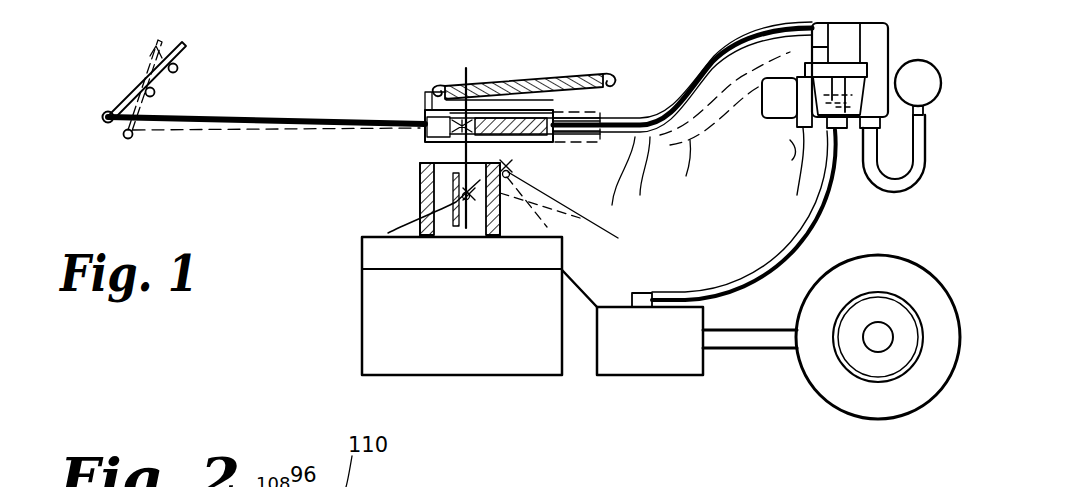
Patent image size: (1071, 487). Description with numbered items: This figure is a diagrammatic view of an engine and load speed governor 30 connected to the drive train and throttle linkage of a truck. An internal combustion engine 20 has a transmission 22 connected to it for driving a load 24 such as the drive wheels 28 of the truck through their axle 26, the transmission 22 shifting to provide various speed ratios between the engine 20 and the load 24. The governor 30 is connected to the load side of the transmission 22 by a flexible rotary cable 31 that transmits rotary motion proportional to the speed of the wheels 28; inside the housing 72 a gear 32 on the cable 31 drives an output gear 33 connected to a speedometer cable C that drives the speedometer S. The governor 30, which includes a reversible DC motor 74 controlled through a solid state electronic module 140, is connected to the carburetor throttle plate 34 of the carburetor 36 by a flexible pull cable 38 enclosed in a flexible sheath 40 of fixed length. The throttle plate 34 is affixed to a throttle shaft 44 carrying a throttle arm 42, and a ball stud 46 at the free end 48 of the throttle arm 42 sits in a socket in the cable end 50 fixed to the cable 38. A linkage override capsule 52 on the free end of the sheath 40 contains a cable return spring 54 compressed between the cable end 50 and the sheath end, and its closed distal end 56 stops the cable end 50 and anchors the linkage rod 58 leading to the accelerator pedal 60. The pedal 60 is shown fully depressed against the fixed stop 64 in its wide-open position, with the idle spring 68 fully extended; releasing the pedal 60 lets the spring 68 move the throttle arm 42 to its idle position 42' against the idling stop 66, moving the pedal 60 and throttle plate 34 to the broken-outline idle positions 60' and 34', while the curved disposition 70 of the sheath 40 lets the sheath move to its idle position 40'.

The internal combustion engine 20 is at (410, 375).
The transmission 22 is at (654, 375).
The load 24 is at (788, 376).
The axle 26 is at (888, 346).
The drive wheels 28 is at (874, 418).
The engine and load speed governor 30 is at (890, 44).
The flexible rotary cable 31 is at (822, 198).
The gear 32 is at (792, 160).
The output gear 33 is at (892, 64).
The carburetor throttle plate 34 is at (415, 197).
The throttle plate idle position 34' is at (542, 208).
The carburetor 36 is at (420, 212).
The flexible pull cable 38 is at (642, 184).
The flexible sheath 40 is at (639, 183).
The sheath idle position 40' is at (717, 163).
The throttle arm 42 is at (294, 142).
The throttle arm idle position 42' is at (574, 212).
The throttle shaft 44 is at (390, 231).
The ball stud 46 is at (466, 92).
The free end of throttle arm 48 is at (512, 168).
The cable end 50 is at (425, 112).
The linkage override capsule 52 is at (538, 144).
The cable return spring 54 is at (553, 143).
The distal end of capsule 56 is at (425, 124).
The linkage rod 58 is at (248, 118).
The accelerator pedal 60 is at (95, 100).
The accelerator pedal idle position 60' is at (130, 78).
The fixed stop 64 is at (184, 64).
The idling stop 66 is at (555, 208).
The idle spring 68 is at (530, 80).
The curved disposition of flexible sheath 70 is at (702, 92).
The housing 72 is at (812, 28).
The reversible DC motor 74 is at (768, 120).
The solid state electronic module 140 is at (797, 195).
The speedometer cable C is at (926, 160).
The speedometer S is at (918, 87).